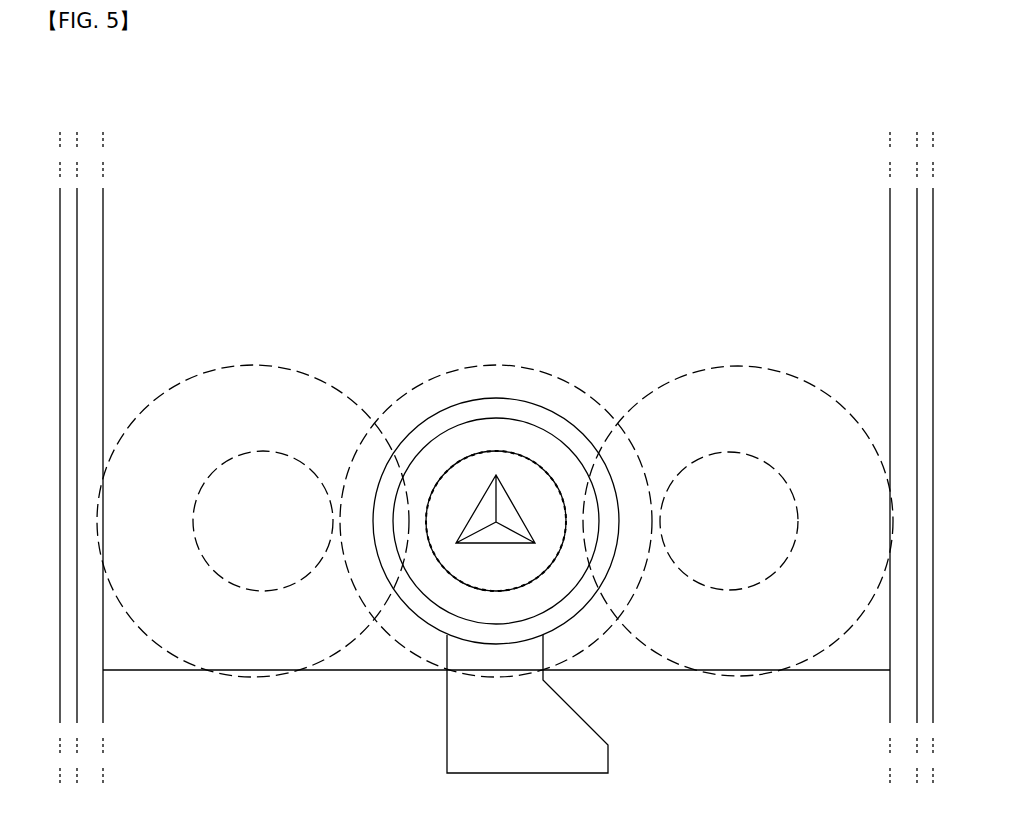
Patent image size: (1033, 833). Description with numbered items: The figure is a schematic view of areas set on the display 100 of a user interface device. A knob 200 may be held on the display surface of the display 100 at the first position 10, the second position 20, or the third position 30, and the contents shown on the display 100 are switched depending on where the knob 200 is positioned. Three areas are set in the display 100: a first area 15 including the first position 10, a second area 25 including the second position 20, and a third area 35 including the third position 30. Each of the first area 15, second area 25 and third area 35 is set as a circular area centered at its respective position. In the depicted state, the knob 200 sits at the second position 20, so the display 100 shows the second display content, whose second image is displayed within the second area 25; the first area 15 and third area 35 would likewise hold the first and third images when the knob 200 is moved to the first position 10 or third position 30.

The display 100 is at (430, 217).
The knob 200 is at (473, 555).
The second position 20 is at (481, 452).
The second area 25 is at (496, 364).
The first area 15 is at (242, 364).
The first position 10 is at (258, 452).
The third area 35 is at (742, 364).
The third position 30 is at (730, 453).